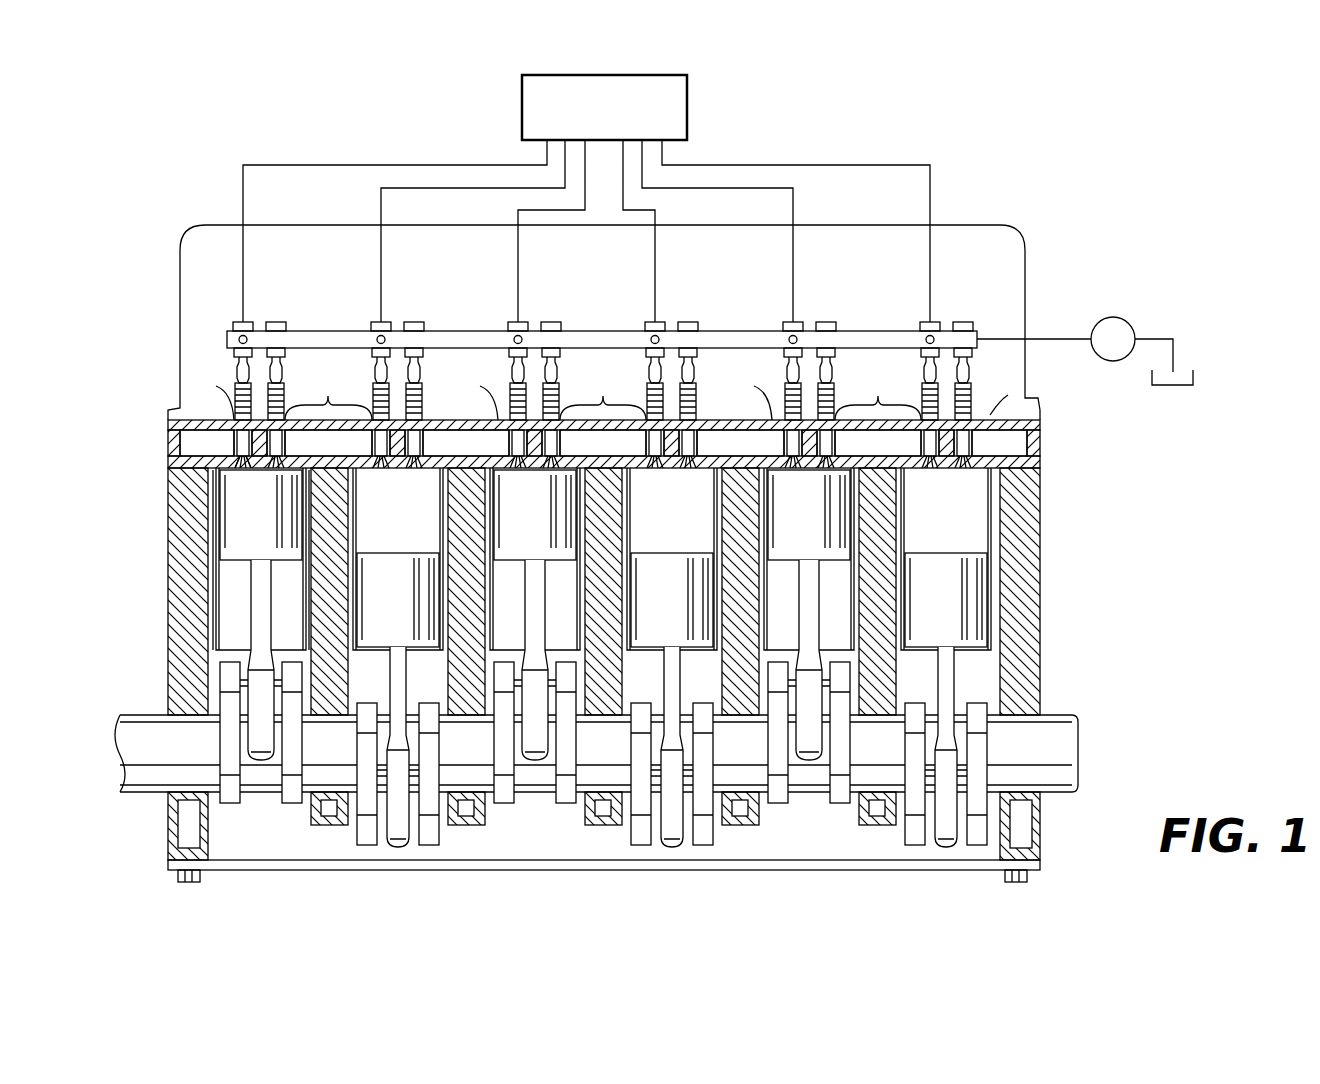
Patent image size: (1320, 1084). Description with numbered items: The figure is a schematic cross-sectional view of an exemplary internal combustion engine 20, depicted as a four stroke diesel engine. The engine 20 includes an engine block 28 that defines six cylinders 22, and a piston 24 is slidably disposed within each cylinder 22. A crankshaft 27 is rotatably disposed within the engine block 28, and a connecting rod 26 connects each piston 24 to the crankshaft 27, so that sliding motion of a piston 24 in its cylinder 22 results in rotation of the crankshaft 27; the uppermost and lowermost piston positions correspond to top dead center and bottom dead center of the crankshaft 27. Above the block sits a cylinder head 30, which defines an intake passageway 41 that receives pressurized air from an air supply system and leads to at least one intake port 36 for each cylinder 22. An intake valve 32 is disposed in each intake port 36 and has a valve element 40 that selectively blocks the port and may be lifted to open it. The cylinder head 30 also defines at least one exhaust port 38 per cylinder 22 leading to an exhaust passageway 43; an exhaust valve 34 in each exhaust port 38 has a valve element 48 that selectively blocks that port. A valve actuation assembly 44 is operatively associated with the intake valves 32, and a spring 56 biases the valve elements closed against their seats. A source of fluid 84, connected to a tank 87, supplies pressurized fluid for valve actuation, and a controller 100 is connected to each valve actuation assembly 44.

The internal combustion engine 20 is at (1089, 220).
The cylinder 22 is at (603, 559).
The piston 24 is at (245, 548).
The connecting rod 26 is at (258, 632).
The crankshaft 27 is at (148, 757).
The engine block 28 is at (175, 485).
The cylinder head 30 is at (1040, 440).
The intake valve 32 is at (603, 395).
The exhaust valve 34 is at (601, 395).
The intake port 36 is at (278, 482).
The exhaust port 38 is at (212, 472).
The valve element 40 is at (238, 470).
The intake passageway 41 is at (603, 443).
The exhaust passageway 43 is at (160, 392).
The valve actuation assembly 44 is at (238, 320).
The valve element 48 is at (188, 440).
The spring 56 is at (230, 358).
The source of fluid 84 is at (1122, 300).
The tank 87 is at (1195, 368).
The controller 100 is at (604, 107).